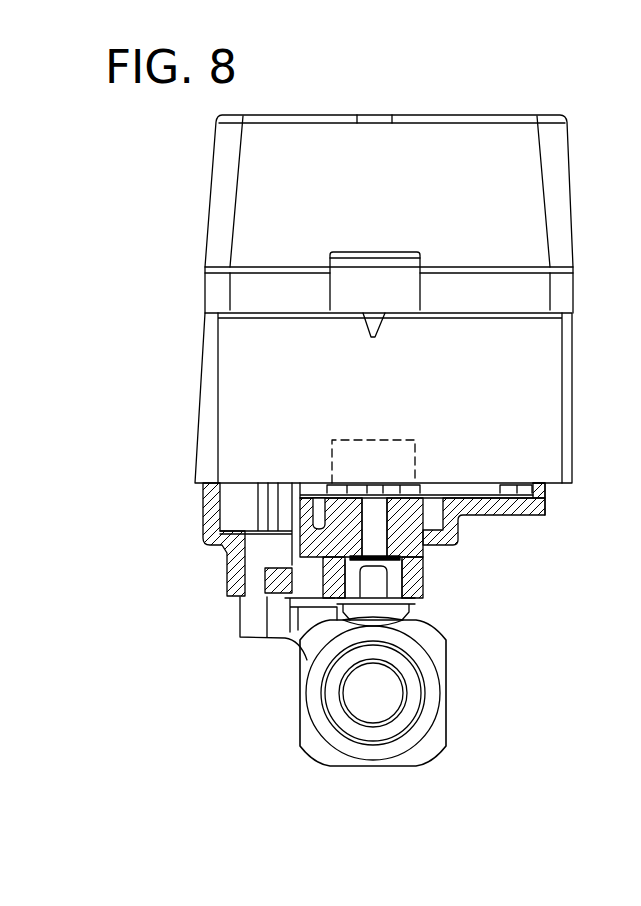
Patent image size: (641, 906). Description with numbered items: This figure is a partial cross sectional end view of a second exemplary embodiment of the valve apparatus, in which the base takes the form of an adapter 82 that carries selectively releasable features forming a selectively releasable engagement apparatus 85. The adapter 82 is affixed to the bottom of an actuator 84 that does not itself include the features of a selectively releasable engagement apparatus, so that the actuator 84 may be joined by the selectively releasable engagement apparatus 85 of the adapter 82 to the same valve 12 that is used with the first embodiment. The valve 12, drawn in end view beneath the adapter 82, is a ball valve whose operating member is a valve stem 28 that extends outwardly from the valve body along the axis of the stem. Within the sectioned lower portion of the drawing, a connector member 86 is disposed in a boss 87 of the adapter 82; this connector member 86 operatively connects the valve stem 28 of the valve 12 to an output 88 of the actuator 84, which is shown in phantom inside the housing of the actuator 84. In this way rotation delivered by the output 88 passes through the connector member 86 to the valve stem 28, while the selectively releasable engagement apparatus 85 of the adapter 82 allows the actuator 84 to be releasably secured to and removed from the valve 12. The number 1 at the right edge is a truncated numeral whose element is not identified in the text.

The actuator 84 is at (556, 373).
The output 88 is at (360, 467).
The adapter 82 is at (548, 497).
The connector member 86 is at (455, 518).
The valve stem 28 is at (372, 547).
The boss 87 is at (415, 585).
The valve 12 is at (447, 686).
The selectively releasable engagement apparatus 85 is at (264, 669).
The valve assembly 1 is at (635, 638).